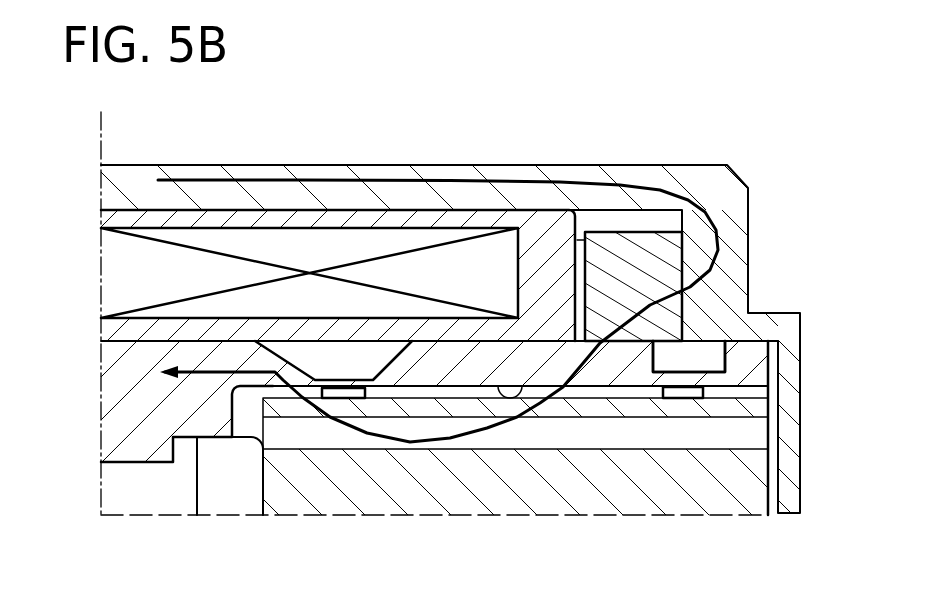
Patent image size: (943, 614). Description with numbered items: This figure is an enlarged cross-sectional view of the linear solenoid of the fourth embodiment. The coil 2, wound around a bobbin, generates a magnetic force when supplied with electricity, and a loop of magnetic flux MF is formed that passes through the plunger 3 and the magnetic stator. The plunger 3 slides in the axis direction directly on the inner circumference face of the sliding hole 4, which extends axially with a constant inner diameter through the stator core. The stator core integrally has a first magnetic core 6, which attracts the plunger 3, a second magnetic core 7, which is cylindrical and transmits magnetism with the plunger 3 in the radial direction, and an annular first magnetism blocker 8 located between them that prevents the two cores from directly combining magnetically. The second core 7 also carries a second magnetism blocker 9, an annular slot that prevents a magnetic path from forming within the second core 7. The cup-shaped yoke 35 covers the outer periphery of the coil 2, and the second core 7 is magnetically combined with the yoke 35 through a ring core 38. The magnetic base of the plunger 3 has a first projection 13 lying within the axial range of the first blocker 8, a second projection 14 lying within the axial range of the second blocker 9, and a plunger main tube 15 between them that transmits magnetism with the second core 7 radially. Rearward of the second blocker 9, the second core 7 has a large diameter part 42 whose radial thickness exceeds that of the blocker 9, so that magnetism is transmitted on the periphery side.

The coil 2 is at (120, 265).
The plunger 3 is at (437, 490).
The sliding hole 4 is at (527, 383).
The first magnetic core 6 is at (115, 387).
The second magnetic core 7 is at (445, 358).
The first magnetism blocker 8 is at (342, 373).
The second magnetism blocker 9 is at (688, 370).
The first projection 13 is at (342, 397).
The second projection 14 is at (685, 395).
The plunger main tube 15 is at (553, 400).
The yoke 35 is at (722, 190).
The ring core 38 is at (630, 263).
The large diameter part 42 is at (743, 353).
The magnetic flux MF is at (220, 180).